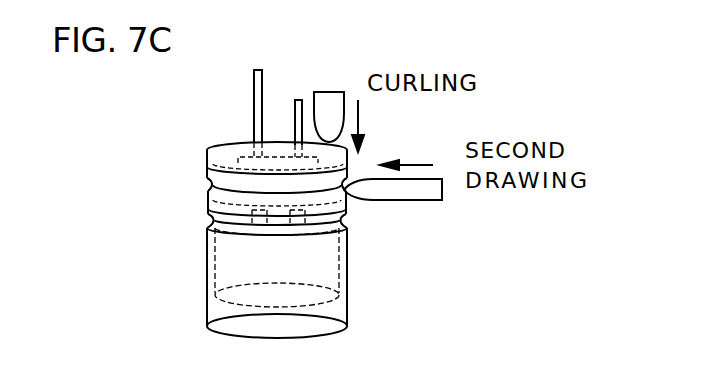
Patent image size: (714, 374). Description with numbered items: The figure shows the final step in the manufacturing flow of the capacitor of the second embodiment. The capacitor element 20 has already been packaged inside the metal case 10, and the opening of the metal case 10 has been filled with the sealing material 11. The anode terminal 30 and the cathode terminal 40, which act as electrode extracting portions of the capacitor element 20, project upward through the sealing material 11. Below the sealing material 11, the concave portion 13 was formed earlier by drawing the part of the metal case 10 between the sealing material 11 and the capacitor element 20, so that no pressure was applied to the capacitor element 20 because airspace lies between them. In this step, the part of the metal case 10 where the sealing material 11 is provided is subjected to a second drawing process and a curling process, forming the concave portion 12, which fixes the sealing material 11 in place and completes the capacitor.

The metal case 10 is at (348, 300).
The sealing material 11 is at (207, 163).
The concave portion 12 is at (208, 187).
The concave portion 13 is at (211, 221).
The capacitor element 20 is at (215, 290).
The anode terminal 30 is at (262, 93).
The cathode terminal 40 is at (302, 100).